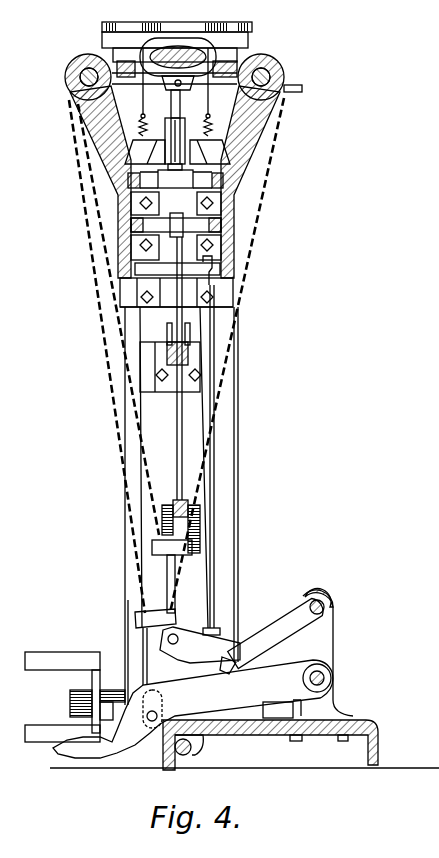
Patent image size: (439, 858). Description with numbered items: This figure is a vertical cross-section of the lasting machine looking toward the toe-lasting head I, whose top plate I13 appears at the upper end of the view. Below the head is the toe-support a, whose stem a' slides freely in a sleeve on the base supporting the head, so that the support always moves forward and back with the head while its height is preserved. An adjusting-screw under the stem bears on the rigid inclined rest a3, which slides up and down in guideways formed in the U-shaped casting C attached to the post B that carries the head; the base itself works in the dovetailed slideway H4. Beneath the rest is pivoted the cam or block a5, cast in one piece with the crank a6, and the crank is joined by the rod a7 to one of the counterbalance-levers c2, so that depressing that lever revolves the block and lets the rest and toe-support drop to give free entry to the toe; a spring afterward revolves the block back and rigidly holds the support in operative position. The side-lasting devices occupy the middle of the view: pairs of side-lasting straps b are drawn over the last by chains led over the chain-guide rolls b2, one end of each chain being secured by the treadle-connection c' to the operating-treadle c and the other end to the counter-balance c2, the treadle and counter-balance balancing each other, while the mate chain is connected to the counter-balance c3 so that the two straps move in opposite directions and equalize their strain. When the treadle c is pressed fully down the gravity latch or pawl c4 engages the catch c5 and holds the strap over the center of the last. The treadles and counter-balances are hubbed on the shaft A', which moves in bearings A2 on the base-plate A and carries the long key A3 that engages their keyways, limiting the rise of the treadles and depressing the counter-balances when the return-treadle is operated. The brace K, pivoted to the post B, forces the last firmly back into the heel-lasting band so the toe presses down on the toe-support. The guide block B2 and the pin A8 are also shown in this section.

The toe-lasting head I is at (177, 19).
The top plate I13 is at (248, 31).
The toe-support a is at (178, 64).
The stem of the toe-support a' is at (181, 130).
The side-lasting straps b is at (143, 100).
The chain-guide rolls b2 is at (68, 76).
The U-shaped casting C is at (92, 130).
The dovetailed slideway H4 is at (205, 153).
The rigid inclined rest a3 is at (175, 179).
The cam or block a5 is at (184, 255).
The crank a6 is at (212, 258).
The rod a7 is at (214, 313).
The post B is at (236, 496).
The guide block B2 is at (150, 375).
The brace K is at (160, 513).
The counter-balance c3 is at (183, 553).
The counter-balance c2 is at (200, 645).
The gravity latch or pawl c4 is at (276, 634).
The catch c5 is at (228, 670).
The operating-treadle c is at (193, 709).
The treadle-connection c' is at (157, 691).
The base-plate A is at (244, 735).
The pin A8 is at (182, 755).
The bearings A2 is at (328, 642).
The long key A3 is at (330, 672).
The shaft A' is at (343, 680).